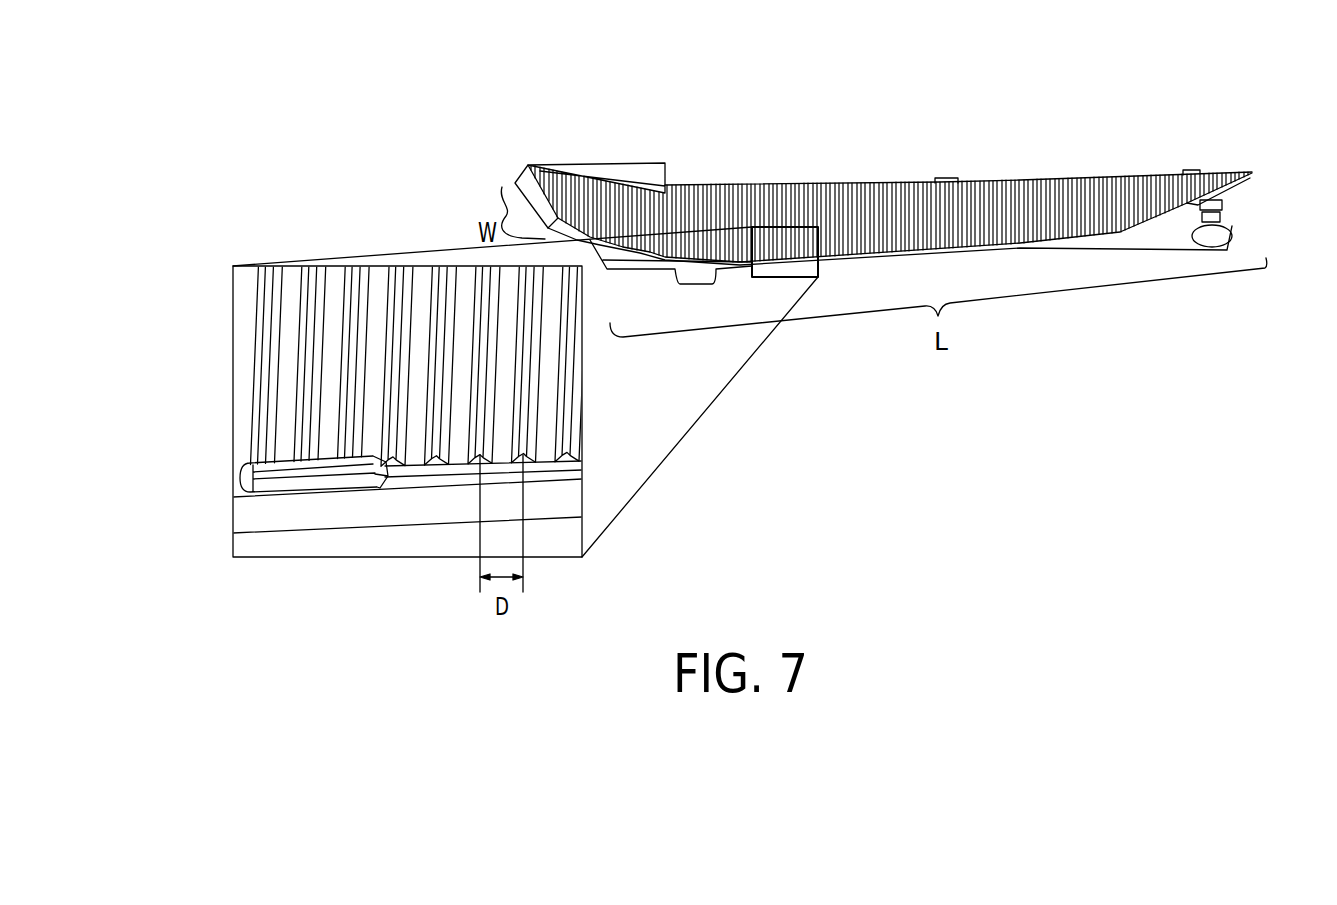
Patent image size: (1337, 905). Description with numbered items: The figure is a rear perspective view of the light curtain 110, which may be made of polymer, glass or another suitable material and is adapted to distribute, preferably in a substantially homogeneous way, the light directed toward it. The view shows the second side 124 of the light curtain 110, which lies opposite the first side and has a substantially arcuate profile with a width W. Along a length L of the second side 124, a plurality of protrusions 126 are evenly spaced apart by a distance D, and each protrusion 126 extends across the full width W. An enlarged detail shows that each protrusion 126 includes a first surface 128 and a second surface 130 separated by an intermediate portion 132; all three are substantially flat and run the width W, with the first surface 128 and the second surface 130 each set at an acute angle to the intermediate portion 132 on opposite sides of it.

The light curtain 110 is at (882, 160).
The second side 124 is at (768, 172).
The protrusions 126 is at (308, 256).
The first surface 128 is at (297, 402).
The second surface 130 is at (313, 428).
The intermediate portion 132 is at (307, 352).